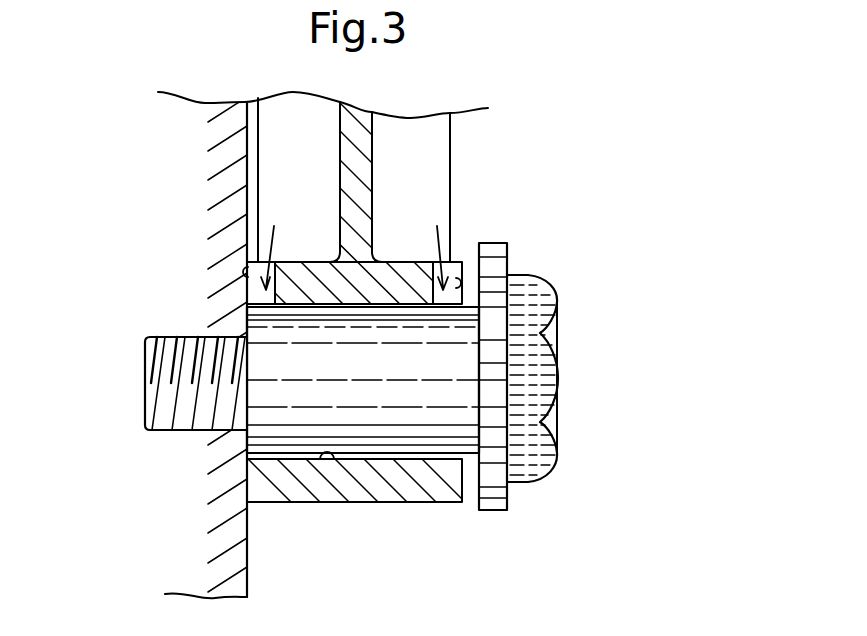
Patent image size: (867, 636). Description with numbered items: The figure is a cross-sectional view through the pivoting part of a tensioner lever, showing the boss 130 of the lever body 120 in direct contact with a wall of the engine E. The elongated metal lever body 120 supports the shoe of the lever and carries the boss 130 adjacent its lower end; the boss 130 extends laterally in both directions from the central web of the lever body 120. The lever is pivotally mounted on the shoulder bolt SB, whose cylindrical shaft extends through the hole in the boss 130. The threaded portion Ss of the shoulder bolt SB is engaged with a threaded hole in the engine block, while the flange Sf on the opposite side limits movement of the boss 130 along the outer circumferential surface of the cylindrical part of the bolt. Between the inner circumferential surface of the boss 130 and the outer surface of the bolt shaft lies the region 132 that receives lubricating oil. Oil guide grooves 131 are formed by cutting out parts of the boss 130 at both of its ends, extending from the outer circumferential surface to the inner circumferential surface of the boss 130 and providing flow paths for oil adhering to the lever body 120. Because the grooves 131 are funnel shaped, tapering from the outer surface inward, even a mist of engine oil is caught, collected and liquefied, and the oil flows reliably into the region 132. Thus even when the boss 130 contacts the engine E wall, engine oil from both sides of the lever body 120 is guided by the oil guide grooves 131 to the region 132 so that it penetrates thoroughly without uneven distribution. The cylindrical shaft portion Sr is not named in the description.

The lever body 120 is at (432, 150).
The boss 130 is at (415, 488).
The oil guide grooves 131 is at (247, 272).
The region 132 is at (330, 459).
The flange Sf is at (495, 272).
The bolt shank and head Sr is at (458, 370).
The threaded portion Ss is at (147, 390).
The engine E is at (183, 515).
The shoulder bolt SB is at (476, 375).